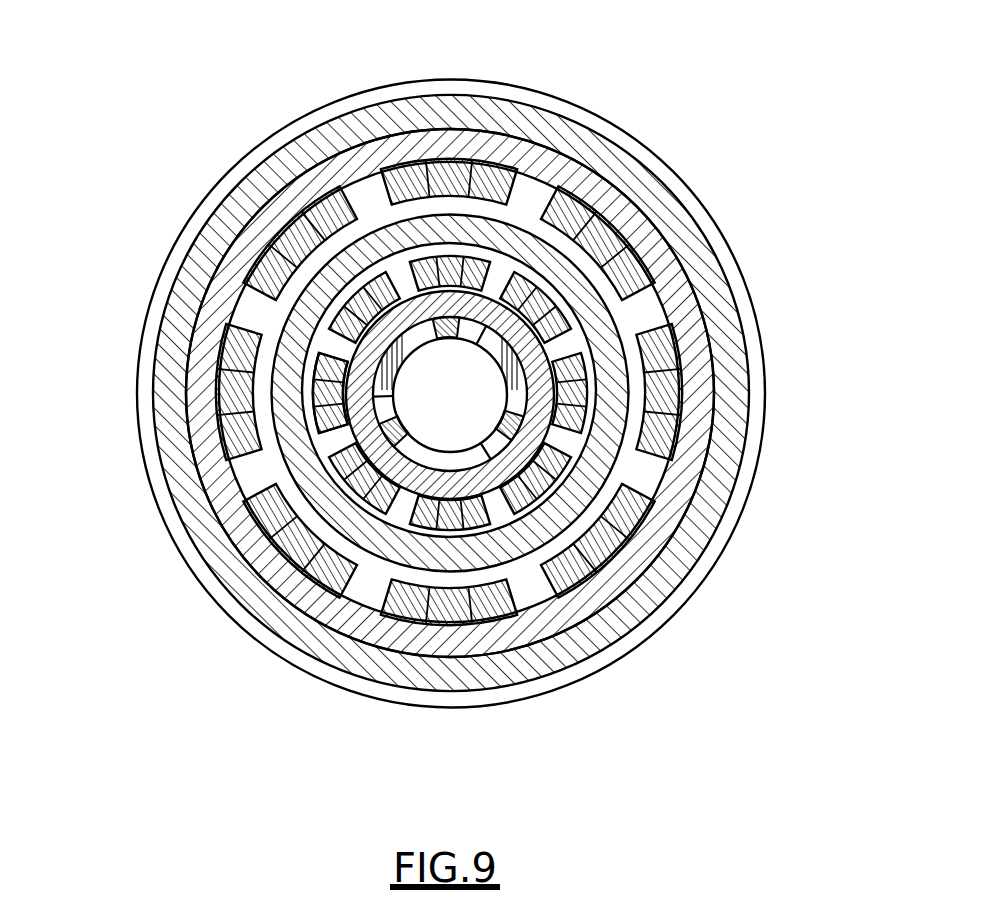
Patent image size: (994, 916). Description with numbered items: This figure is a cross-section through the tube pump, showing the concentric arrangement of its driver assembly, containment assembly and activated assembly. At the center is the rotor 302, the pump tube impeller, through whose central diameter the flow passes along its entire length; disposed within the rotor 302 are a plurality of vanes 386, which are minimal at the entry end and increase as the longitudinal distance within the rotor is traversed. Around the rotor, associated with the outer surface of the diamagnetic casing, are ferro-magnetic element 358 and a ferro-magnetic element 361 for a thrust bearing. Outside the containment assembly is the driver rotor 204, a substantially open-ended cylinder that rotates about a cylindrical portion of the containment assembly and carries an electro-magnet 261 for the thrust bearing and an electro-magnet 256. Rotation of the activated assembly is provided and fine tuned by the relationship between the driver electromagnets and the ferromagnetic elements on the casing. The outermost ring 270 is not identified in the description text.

The driver rotor 204 is at (700, 367).
The outer shell ring 270 is at (693, 245).
The electro-magnet for a thrust bearing 261 is at (324, 202).
The electro-magnet 256 is at (282, 227).
The ferro-magnetic element 358 is at (305, 394).
The ferro-magnetic element for a thrust bearing 361 is at (316, 362).
The rotor 302 is at (493, 307).
The vanes 386 is at (438, 458).